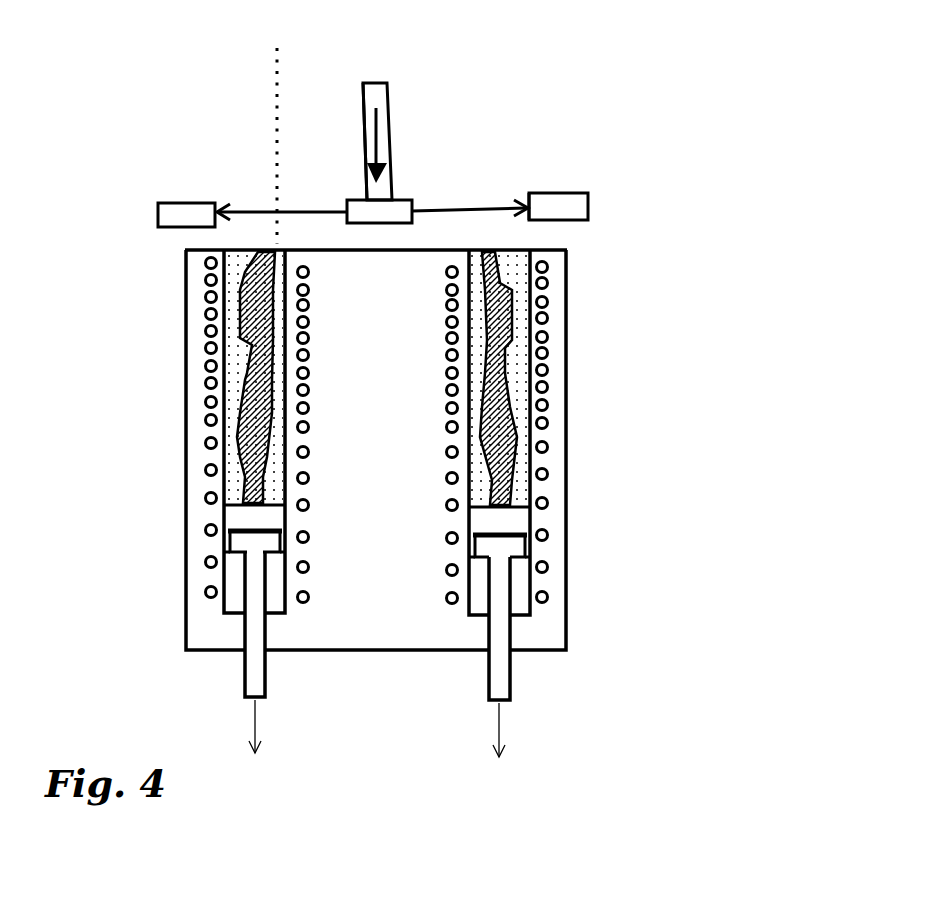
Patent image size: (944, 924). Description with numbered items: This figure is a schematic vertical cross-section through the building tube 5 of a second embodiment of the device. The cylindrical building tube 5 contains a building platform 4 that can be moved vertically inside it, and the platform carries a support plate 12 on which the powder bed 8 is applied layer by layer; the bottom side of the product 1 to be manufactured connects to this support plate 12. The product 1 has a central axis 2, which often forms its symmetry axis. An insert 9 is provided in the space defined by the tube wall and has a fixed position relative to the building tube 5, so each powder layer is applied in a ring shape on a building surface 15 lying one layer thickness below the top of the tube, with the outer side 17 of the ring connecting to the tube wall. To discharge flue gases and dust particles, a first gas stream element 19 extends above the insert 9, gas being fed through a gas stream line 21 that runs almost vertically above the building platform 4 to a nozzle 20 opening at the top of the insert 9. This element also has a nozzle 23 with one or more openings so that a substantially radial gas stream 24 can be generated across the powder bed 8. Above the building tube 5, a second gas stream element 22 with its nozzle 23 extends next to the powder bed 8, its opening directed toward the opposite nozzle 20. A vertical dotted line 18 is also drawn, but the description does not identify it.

The product 1 is at (253, 365).
The central axis 2 is at (280, 338).
The building platform 4 is at (217, 558).
The building tube 5 is at (192, 503).
The powder bed 8 is at (510, 365).
The insert 9 is at (348, 565).
The support plate 12 is at (380, 155).
The building surface 15 is at (242, 248).
The outer side 17 is at (538, 253).
The vertical axis 18 is at (280, 73).
The first gas stream element 19 is at (382, 97).
The nozzle 20 is at (347, 203).
The gas stream line 21 is at (363, 127).
The second gas stream element 22 is at (567, 205).
The nozzle 23 is at (530, 193).
The gas stream 24 is at (460, 207).